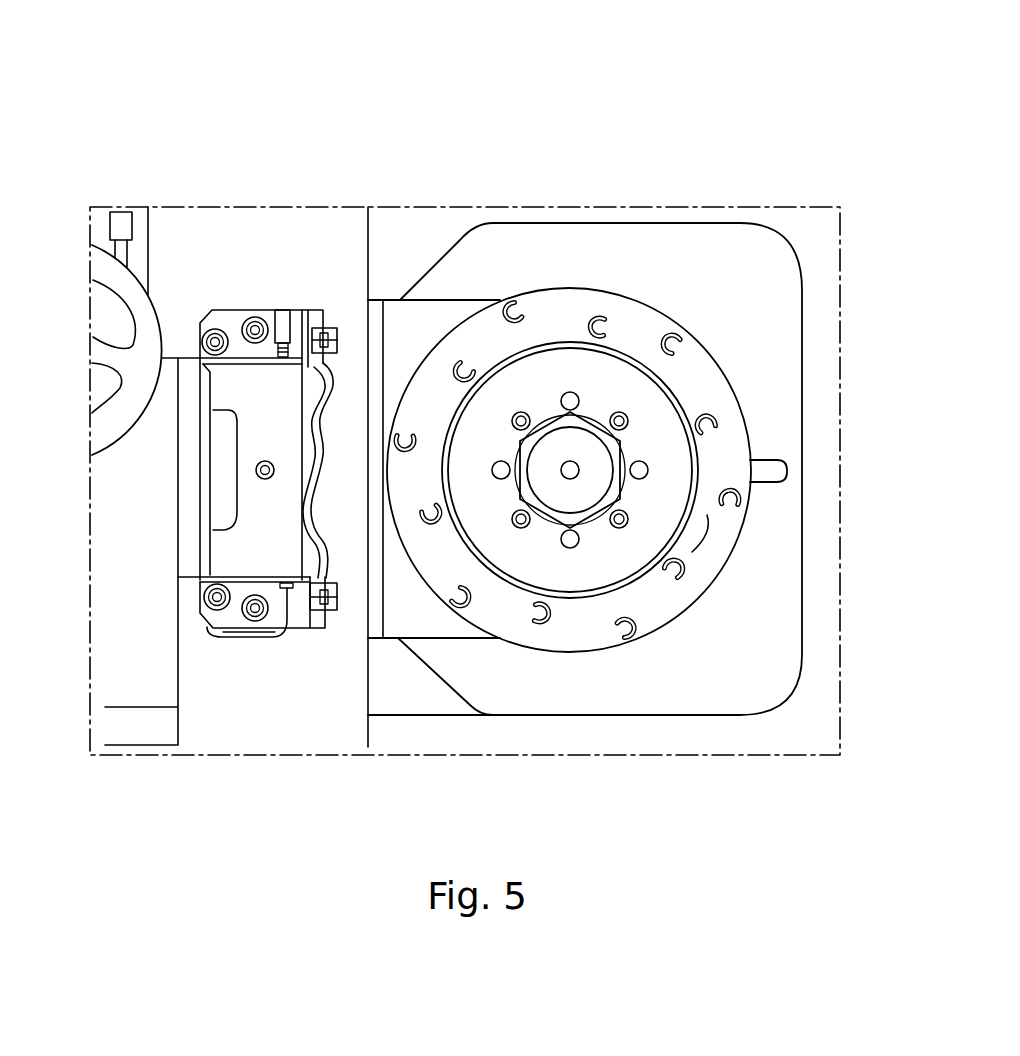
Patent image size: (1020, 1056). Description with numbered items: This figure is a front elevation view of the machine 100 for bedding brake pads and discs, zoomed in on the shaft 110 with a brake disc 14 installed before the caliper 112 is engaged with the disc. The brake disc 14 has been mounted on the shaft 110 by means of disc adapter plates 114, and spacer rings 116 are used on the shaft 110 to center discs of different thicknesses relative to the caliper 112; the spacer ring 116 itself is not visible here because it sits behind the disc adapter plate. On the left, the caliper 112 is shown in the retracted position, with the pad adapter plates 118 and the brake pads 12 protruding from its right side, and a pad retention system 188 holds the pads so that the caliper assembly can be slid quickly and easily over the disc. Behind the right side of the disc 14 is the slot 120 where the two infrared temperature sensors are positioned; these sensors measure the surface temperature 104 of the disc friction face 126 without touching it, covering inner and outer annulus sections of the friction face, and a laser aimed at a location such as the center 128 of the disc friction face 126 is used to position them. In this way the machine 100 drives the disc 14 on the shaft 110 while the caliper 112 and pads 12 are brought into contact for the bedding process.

The machine 100 is at (333, 68).
The brake pad 12 is at (337, 630).
The caliper 112 is at (241, 253).
The pad adapter plates 118 is at (272, 276).
The pad retention system 188 is at (228, 485).
The brake disc 14 is at (695, 375).
The disc friction face 126 is at (422, 569).
The slot 120 is at (762, 458).
The disc adapter plates 114 is at (557, 375).
The shaft 110 is at (553, 492).
The spacer rings 116 is at (594, 517).
The surface temperature 104 is at (705, 569).
The center of the disc friction face 128 is at (705, 532).